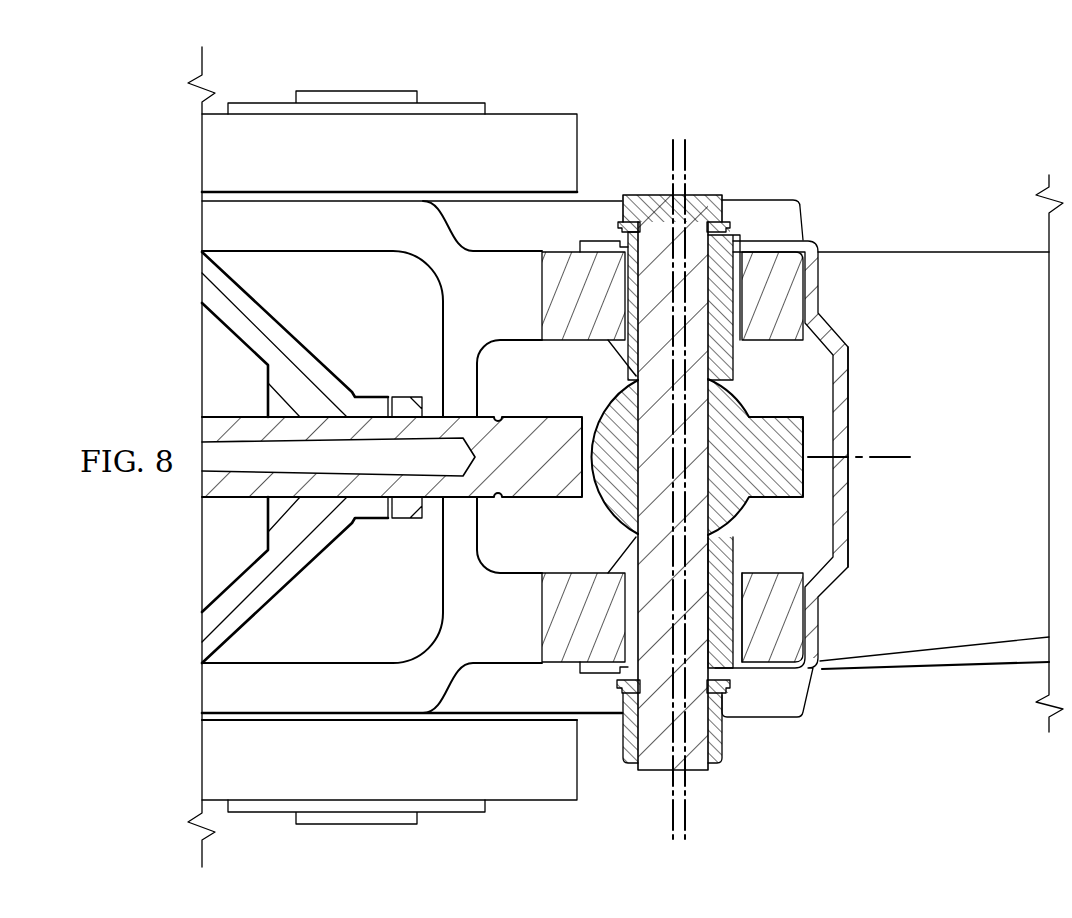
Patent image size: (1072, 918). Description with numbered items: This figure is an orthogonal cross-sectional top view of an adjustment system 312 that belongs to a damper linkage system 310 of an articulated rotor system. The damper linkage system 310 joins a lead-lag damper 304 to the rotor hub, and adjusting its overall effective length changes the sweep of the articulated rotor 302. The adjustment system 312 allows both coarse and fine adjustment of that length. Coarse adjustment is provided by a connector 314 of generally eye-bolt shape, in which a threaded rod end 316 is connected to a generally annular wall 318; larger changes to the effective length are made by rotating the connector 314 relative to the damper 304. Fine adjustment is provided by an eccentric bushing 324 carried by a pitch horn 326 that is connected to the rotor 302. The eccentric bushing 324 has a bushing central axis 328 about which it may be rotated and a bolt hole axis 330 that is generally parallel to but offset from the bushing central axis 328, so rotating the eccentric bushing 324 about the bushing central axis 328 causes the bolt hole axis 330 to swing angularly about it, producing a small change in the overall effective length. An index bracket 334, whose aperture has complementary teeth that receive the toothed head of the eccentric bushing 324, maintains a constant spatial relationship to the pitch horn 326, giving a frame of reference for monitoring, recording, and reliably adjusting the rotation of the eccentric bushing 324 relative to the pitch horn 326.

The articulated rotor 302 is at (958, 252).
The lead-lag damper 304 is at (277, 585).
The damper linkage system 310 is at (770, 116).
The adjustment system 312 is at (818, 186).
The connector 314 is at (548, 490).
The threaded rod end 316 is at (402, 507).
The annular wall 318 is at (797, 475).
The eccentric bushing 324 is at (725, 362).
The pitch horn 326 is at (797, 288).
The bushing central axis 328 is at (673, 150).
The bolt hole axis 330 is at (686, 150).
The index bracket 334 is at (850, 515).